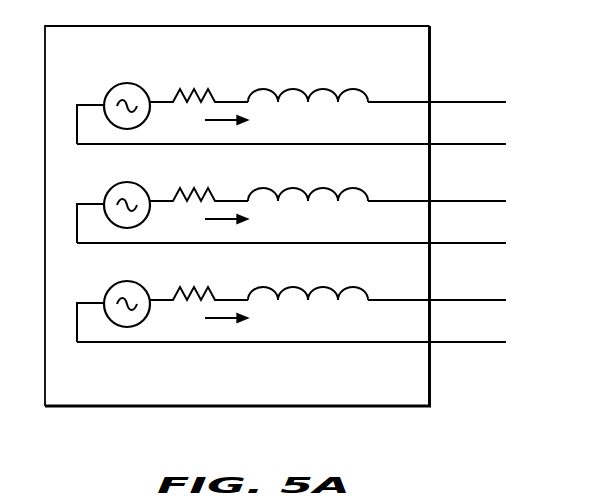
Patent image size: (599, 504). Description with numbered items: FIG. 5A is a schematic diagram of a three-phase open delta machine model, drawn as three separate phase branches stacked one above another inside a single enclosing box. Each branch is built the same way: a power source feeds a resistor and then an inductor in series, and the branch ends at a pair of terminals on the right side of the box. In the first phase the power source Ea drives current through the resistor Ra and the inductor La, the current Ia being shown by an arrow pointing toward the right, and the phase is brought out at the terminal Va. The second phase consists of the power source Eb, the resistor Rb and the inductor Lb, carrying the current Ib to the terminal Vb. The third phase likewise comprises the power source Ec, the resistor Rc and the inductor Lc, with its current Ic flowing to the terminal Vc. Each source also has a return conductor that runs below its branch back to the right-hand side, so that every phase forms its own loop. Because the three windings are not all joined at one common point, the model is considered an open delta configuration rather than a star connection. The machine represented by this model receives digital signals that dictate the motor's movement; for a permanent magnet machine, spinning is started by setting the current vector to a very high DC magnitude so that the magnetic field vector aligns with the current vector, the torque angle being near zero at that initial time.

The power source Ea is at (113, 101).
The resistor Ra is at (199, 80).
The inductor La is at (308, 80).
The current Ia is at (218, 119).
The phase a output voltage terminal Va is at (303, 116).
The power source Eb is at (113, 201).
The resistor Rb is at (199, 180).
The inductor Lb is at (308, 180).
The current Ib is at (218, 218).
The phase b output voltage terminal Vb is at (303, 215).
The power source Ec is at (113, 300).
The resistor Rc is at (199, 279).
The inductor Lc is at (308, 279).
The current Ic is at (218, 317).
The phase c output voltage terminal Vc is at (303, 314).